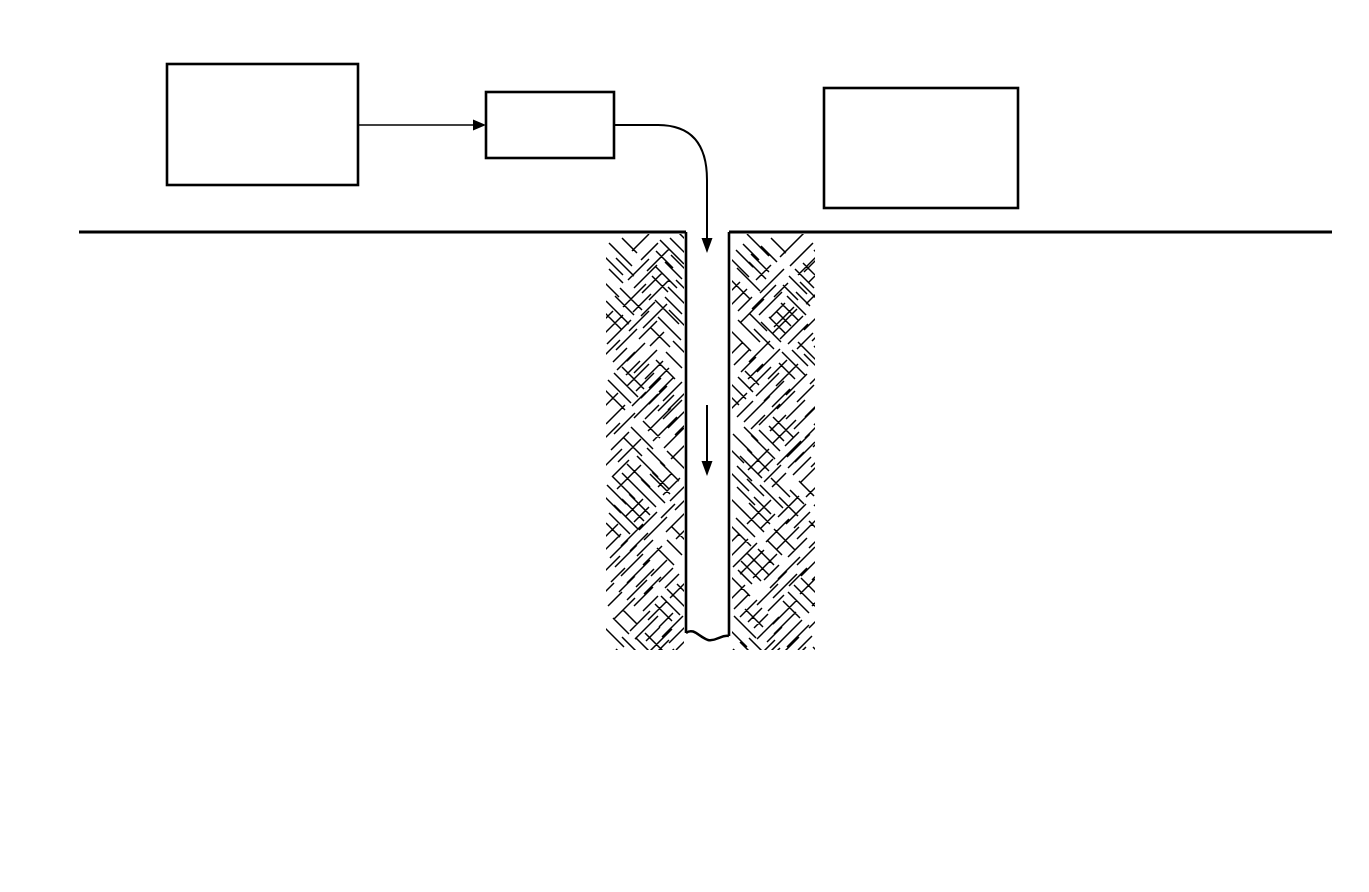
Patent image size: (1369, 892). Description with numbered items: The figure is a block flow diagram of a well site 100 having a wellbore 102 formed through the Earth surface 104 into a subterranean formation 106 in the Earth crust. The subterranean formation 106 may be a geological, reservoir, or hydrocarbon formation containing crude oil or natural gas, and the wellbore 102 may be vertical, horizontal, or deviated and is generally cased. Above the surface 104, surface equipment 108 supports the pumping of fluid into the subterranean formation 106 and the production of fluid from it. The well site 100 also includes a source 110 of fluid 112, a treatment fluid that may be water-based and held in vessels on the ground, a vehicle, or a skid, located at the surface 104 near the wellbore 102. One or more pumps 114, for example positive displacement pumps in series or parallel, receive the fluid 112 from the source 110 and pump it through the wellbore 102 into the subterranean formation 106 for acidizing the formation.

The well site 100 is at (678, 790).
The wellbore 102 is at (683, 352).
The Earth surface 104 is at (138, 232).
The subterranean formation 106 is at (812, 378).
The surface equipment 108 is at (918, 88).
The source of fluid 110 is at (245, 63).
The fluid 112 is at (690, 145).
The pump 114 is at (548, 92).